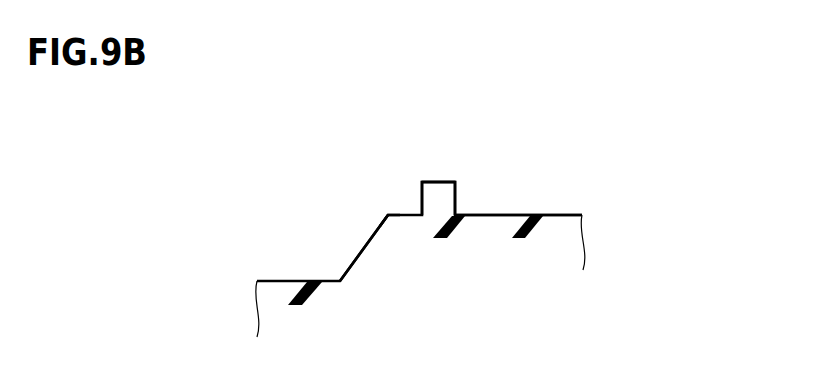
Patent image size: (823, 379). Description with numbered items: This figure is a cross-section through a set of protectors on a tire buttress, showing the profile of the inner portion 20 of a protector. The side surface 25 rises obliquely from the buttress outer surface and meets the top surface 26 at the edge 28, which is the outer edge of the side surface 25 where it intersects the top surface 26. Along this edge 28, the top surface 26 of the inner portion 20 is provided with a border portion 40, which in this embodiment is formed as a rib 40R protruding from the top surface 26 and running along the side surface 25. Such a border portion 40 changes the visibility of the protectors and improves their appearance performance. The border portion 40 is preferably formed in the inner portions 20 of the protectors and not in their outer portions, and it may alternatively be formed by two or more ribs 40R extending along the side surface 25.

The inner portion 20 is at (567, 155).
The side surface 25 is at (362, 248).
The top surface 26 is at (510, 213).
The edge 28 is at (387, 213).
The border portion 40 is at (408, 165).
The rib 40R is at (438, 195).